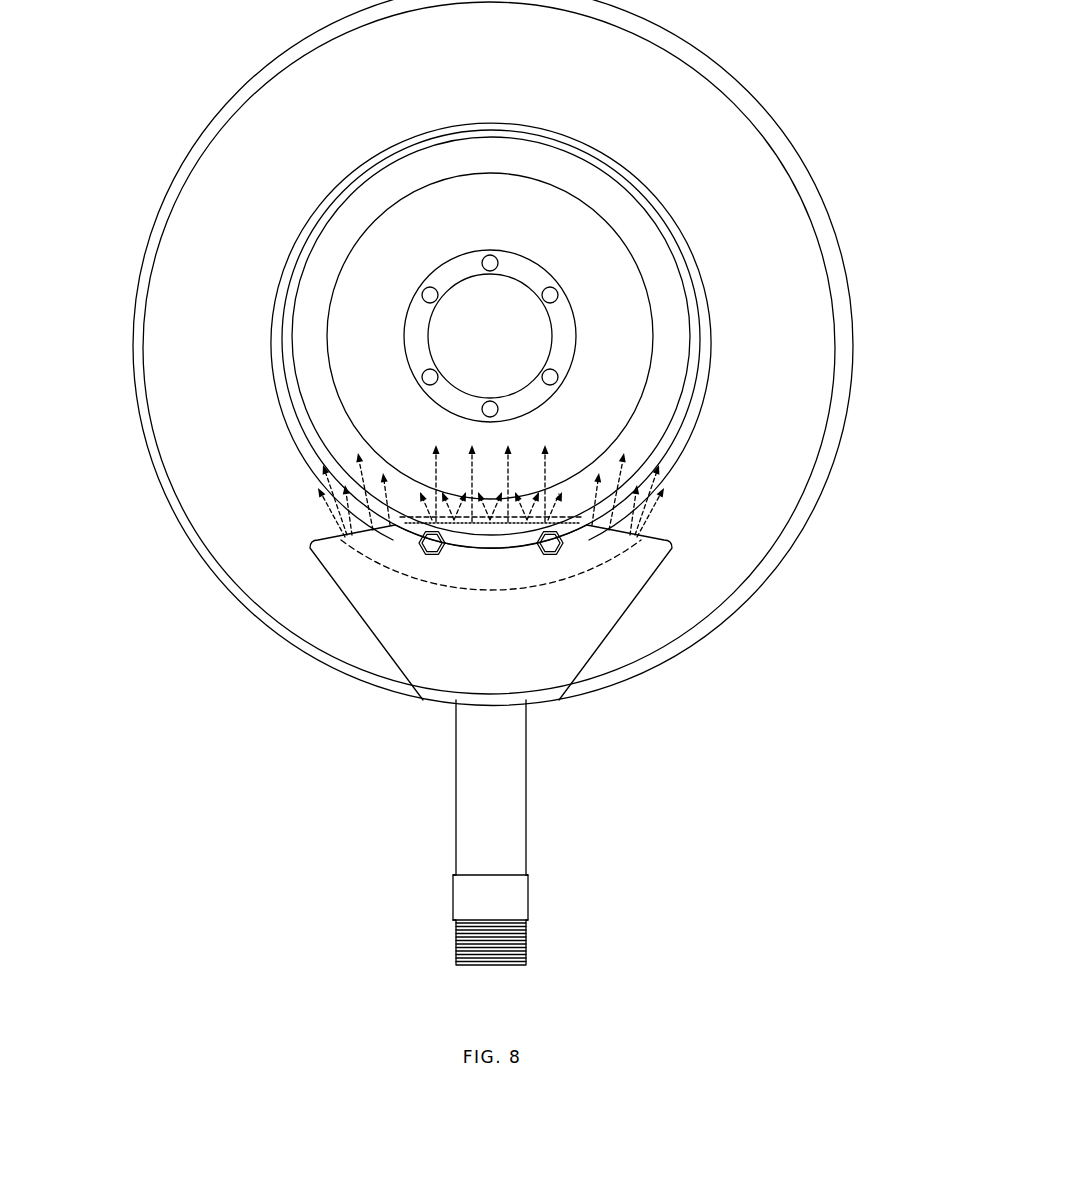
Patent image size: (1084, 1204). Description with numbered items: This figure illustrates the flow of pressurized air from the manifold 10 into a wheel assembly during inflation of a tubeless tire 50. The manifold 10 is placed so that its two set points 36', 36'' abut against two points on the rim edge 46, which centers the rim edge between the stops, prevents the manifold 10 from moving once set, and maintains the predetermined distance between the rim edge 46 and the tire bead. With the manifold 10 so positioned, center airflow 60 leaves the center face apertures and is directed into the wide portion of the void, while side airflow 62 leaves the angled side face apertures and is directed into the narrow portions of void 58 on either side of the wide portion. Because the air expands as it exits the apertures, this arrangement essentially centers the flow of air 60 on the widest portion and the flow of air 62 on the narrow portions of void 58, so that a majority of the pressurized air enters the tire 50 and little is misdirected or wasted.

The manifold 10 is at (650, 611).
The tire 50 is at (737, 88).
The narrow portions of void 58 is at (307, 458).
The center airflow 60 is at (546, 466).
The side airflow 62 is at (322, 505).
The rim edge 46 is at (487, 550).
The set point 36' is at (375, 654).
The set point 36'' is at (588, 654).